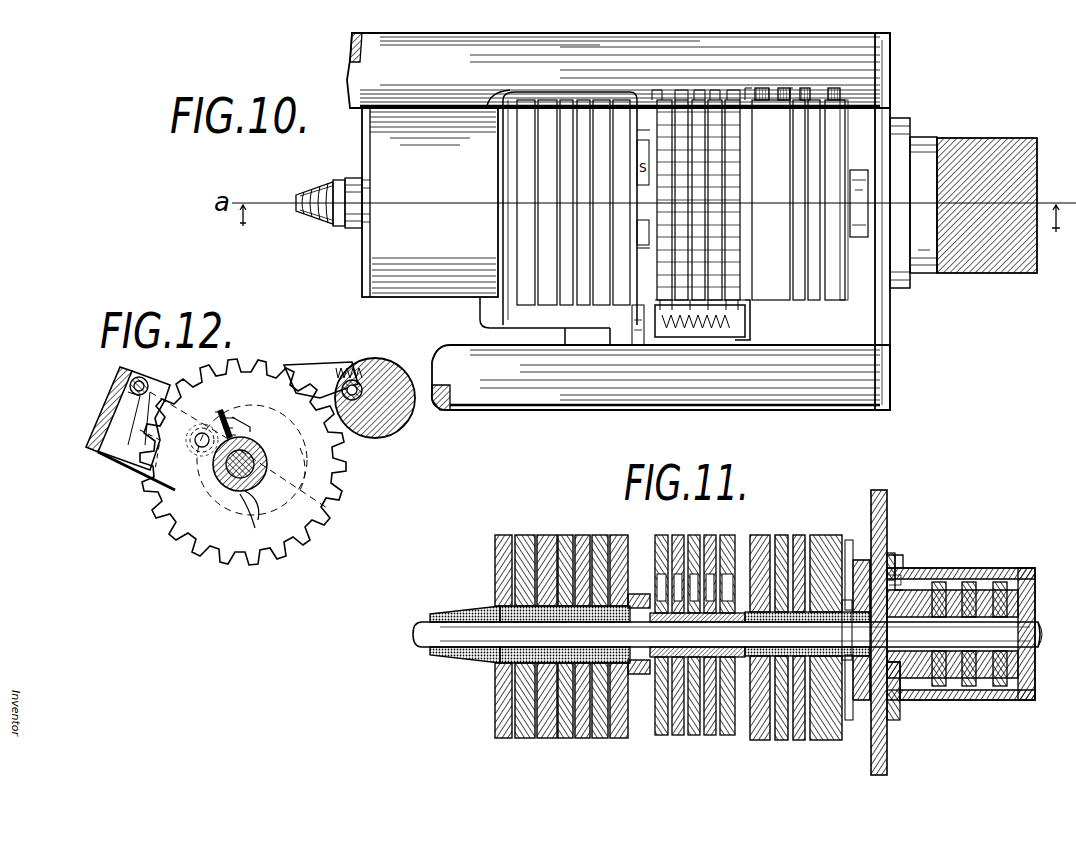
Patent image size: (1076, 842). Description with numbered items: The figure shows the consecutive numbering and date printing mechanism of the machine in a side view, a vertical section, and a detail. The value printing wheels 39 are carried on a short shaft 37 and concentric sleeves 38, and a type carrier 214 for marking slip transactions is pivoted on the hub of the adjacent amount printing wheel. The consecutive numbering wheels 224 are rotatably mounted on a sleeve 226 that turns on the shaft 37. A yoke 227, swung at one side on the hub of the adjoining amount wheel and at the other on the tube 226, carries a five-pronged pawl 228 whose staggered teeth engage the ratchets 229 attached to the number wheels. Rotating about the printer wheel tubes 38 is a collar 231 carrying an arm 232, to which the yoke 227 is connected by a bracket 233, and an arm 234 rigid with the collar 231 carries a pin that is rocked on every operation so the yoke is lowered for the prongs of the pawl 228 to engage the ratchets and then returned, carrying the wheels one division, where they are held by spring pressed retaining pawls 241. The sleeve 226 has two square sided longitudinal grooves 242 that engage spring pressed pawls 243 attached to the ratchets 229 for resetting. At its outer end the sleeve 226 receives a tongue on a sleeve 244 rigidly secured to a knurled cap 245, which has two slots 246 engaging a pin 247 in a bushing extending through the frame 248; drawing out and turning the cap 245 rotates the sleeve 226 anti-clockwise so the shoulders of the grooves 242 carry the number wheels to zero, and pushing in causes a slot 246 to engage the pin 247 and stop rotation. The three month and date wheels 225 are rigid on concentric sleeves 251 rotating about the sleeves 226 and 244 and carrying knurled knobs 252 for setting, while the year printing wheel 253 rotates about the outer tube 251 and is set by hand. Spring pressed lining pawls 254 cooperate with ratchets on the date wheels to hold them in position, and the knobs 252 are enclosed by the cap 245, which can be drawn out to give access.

In FIG. 10, the short shaft 37 is at (294, 213).
In FIG. 12, the short shaft 37 is at (268, 470).
In FIG. 11, the short shaft 37 is at (414, 638).
In FIG. 10, the concentric sleeves 38 is at (340, 239).
In FIG. 11, the concentric sleeves 38 is at (482, 665).
In FIG. 10, the value printing wheels 39 is at (520, 172).
In FIG. 11, the value printing wheels 39 is at (615, 533).
In FIG. 10, the type carrier 214 is at (642, 100).
In FIG. 10, the consecutive numbering wheels 224 is at (730, 300).
In FIG. 11, the consecutive numbering wheels 224 is at (688, 516).
In FIG. 11, the month and date wheels 225 is at (800, 740).
In FIG. 12, the sleeve 226 is at (262, 478).
In FIG. 11, the sleeve 226 is at (742, 615).
In FIG. 10, the yoke 227 is at (748, 340).
In FIG. 12, the yoke 227 is at (97, 421).
In FIG. 10, the five-pronged pawl 228 is at (690, 337).
In FIG. 12, the five-pronged pawl 228 is at (130, 456).
In FIG. 12, the ratchets 229 is at (172, 506).
In FIG. 10, the collar 231 is at (380, 297).
In FIG. 10, the arm 232 is at (480, 322).
In FIG. 10, the bracket 233 is at (645, 348).
In FIG. 10, the arm 234 is at (362, 266).
In FIG. 10, the spring pressed retaining pawls 241 is at (662, 118).
In FIG. 12, the spring pressed retaining pawls 241 is at (316, 364).
In FIG. 12, the longitudinal grooves 242 is at (253, 500).
In FIG. 12, the spring pressed pawls 243 is at (212, 421).
In FIG. 11, the sleeve 244 is at (1050, 606).
In FIG. 10, the knurled cap 245 is at (985, 275).
In FIG. 11, the knurled cap 245 is at (1010, 568).
In FIG. 11, the slots 246 is at (895, 556).
In FIG. 11, the pin 247 is at (908, 563).
In FIG. 10, the frame 248 is at (887, 342).
In FIG. 11, the frame 248 is at (884, 753).
In FIG. 11, the concentric sleeves 251 is at (858, 560).
In FIG. 11, the knurled collars or knobs 252 is at (1003, 686).
In FIG. 10, the year printing wheel 253 is at (832, 120).
In FIG. 11, the year printing wheel 253 is at (832, 740).
In FIG. 10, the spring pressed lining pawls 254 is at (792, 105).